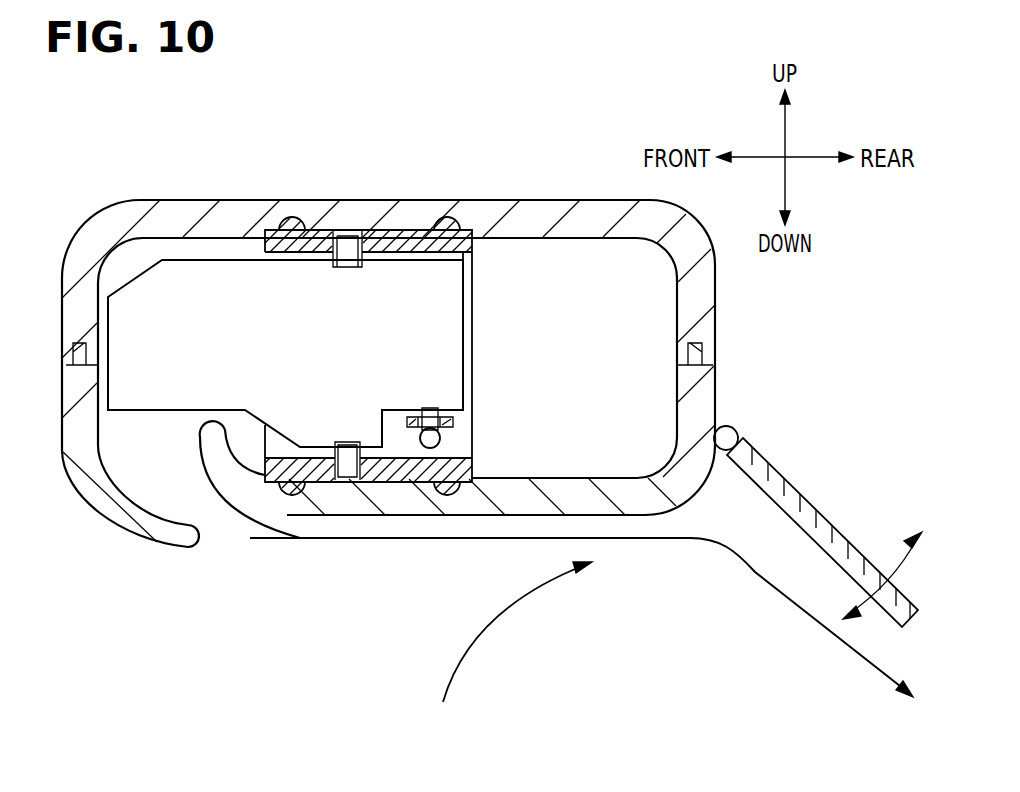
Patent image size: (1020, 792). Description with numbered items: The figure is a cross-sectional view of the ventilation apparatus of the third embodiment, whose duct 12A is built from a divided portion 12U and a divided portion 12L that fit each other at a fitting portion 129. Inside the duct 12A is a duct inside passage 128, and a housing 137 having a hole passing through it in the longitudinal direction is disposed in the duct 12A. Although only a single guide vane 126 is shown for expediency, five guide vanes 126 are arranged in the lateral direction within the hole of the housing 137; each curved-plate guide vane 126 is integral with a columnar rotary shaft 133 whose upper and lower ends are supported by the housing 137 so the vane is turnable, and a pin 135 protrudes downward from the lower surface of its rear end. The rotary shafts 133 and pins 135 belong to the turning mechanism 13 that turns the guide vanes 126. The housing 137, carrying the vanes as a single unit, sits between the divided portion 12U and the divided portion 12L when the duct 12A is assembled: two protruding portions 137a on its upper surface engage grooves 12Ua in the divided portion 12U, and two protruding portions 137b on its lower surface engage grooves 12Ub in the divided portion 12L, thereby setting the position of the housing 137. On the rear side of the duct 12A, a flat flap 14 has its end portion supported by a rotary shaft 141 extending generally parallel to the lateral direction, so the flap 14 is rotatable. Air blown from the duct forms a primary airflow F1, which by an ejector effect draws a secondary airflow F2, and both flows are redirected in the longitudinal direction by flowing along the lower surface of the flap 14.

The duct 12A is at (537, 201).
The divided portion 12U is at (93, 218).
The divided portion 12L is at (84, 496).
The groove 12Ua is at (440, 213).
The lower engagement holes 12Ub is at (445, 497).
The guide vane 126 is at (181, 259).
The duct inside passage 128 is at (634, 361).
The fitting portion 129 is at (63, 362).
The housing 137 is at (472, 270).
The protruding portion 137a is at (292, 217).
The protruding portion 137b is at (292, 496).
The rotary shaft 133 is at (347, 268).
The turning mechanism 13 is at (454, 422).
The pin 135 is at (441, 438).
The rotary shaft 141 is at (739, 432).
The flap 14 is at (828, 520).
The primary airflow F1 is at (878, 672).
The secondary airflow F2 is at (480, 632).